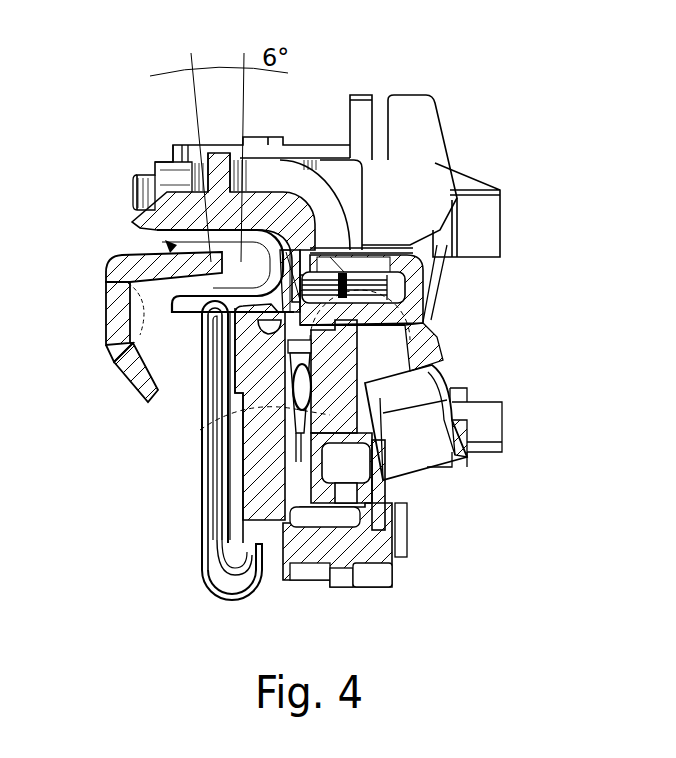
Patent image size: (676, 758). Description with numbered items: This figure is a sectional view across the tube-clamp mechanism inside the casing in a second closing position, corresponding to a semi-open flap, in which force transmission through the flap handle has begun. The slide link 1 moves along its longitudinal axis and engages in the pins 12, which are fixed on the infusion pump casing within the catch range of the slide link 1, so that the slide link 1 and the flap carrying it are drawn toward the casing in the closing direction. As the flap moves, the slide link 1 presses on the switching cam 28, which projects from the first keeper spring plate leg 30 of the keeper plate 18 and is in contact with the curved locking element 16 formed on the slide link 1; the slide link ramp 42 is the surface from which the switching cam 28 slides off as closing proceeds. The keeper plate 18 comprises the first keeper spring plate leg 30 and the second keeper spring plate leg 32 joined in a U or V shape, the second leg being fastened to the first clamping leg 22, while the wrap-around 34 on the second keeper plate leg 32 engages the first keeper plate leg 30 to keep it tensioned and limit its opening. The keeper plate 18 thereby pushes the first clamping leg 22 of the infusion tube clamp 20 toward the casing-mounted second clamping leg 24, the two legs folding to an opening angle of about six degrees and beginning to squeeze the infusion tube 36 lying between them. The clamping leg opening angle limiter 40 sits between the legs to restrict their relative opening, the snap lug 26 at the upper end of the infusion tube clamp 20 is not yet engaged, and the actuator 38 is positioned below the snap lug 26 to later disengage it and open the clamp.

The slide link 1 is at (115, 282).
The pins 12 is at (132, 223).
The locking element 16 is at (102, 302).
The keeper plate 18 is at (200, 555).
The infusion tube clamp 20 is at (258, 479).
The first clamping leg 22 is at (270, 408).
The second clamping leg 24 is at (300, 425).
The snap lug 26 is at (425, 322).
The switching cam 28 is at (113, 330).
The first keeper spring plate leg 30 is at (232, 542).
The second keeper spring plate leg 32 is at (248, 493).
The wrap-around 34 is at (190, 328).
The infusion tube 36 is at (285, 394).
The actuator 38 is at (412, 445).
The clamping leg opening angle limiter 40 is at (335, 505).
The slide link ramp 42 is at (112, 367).